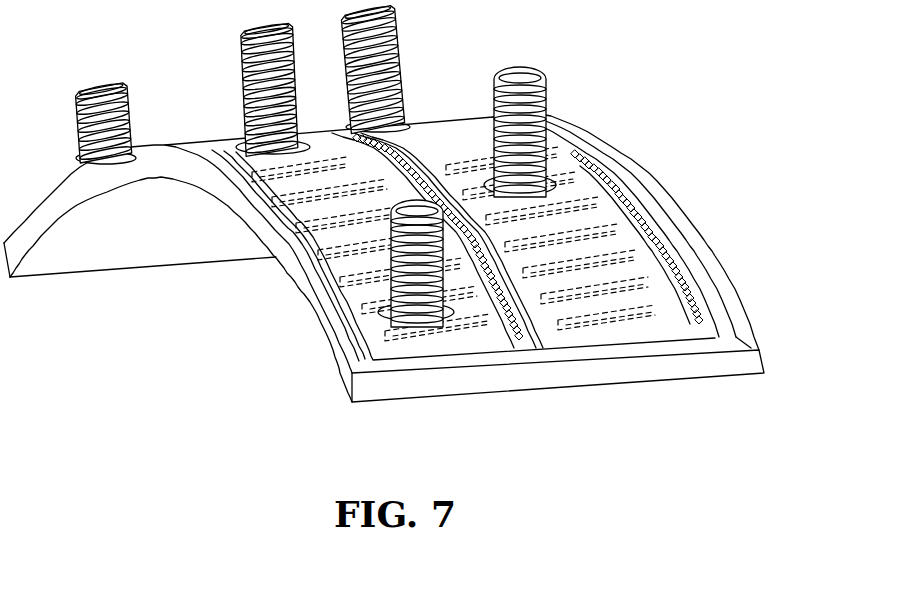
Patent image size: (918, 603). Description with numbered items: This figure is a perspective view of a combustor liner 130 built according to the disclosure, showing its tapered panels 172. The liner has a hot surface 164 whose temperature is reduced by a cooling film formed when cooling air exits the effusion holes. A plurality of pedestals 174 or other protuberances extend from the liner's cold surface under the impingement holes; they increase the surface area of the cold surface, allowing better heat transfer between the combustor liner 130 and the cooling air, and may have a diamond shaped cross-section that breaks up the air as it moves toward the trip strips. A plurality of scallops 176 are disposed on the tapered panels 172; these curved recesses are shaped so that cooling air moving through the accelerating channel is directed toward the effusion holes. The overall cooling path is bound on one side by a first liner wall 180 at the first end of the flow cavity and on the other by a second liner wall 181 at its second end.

The combustor liner 130 is at (390, 387).
The hot surface 164 is at (125, 218).
The tapered panels 172 is at (567, 183).
The pedestals 174 is at (669, 250).
The scallops 176 is at (569, 327).
The first liner wall 180 is at (712, 312).
The second liner wall 181 is at (333, 315).